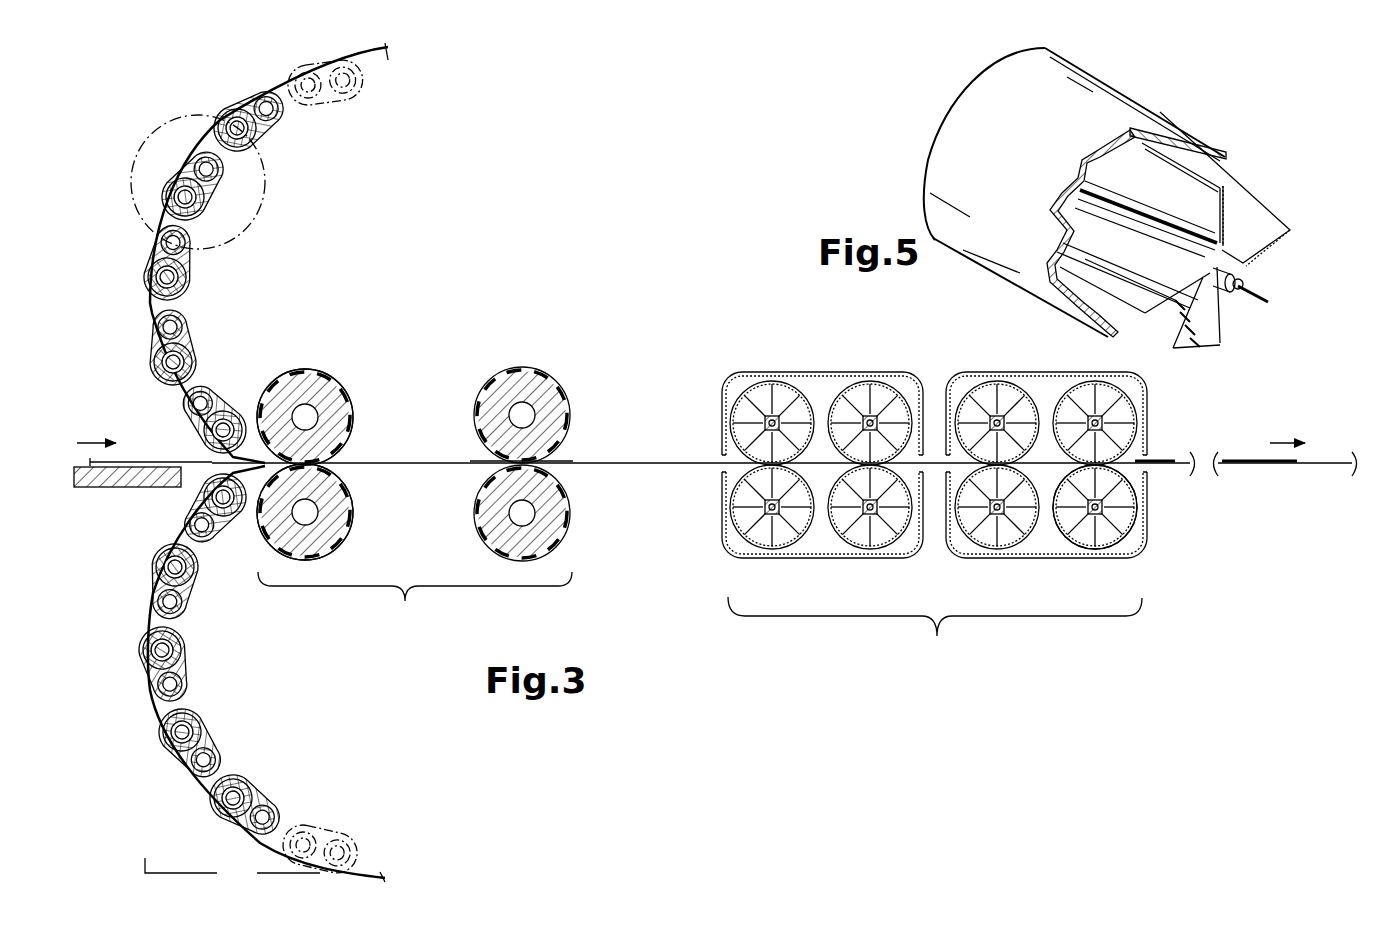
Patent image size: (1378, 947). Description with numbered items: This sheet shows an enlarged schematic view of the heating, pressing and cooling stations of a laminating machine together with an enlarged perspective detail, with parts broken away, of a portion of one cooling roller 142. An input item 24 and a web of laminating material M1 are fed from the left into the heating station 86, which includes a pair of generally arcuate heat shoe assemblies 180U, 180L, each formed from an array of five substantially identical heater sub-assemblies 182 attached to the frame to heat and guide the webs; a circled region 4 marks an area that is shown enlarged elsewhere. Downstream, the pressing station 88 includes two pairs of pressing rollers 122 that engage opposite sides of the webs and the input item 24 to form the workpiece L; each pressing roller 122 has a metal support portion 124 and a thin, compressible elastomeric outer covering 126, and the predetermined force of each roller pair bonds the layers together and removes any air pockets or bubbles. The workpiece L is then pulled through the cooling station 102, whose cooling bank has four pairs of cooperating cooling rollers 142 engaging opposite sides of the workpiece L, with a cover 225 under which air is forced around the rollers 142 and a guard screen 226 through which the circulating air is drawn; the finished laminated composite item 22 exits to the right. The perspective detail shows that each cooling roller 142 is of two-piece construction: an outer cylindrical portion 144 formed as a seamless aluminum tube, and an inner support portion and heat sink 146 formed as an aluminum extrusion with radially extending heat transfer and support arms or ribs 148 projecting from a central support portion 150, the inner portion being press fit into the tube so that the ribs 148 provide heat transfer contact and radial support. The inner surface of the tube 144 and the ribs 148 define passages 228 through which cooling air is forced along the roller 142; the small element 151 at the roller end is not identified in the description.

In FIG. 3, the web of laminating material M1 is at (382, 48).
In FIG. 3, the enlarged detail region 4 is at (263, 210).
In FIG. 3, the upper heat shoe assembly 180U is at (148, 305).
In FIG. 3, the lower heat shoe assembly 180L is at (151, 708).
In FIG. 3, the heater sub-assembly 182 is at (203, 355).
In FIG. 3, the input item 24 is at (195, 462).
In FIG. 3, the support portion 124 is at (283, 395).
In FIG. 3, the outer covering 126 is at (338, 378).
In FIG. 3, the pressing roller 122 is at (476, 375).
In FIG. 3, the pressing station 88 is at (415, 602).
In FIG. 3, the workpiece L is at (620, 465).
In FIG. 3, the cover 225 is at (965, 443).
In FIG. 3, the guard screen 226 is at (992, 398).
In FIG. 3, the cooling roller 142 is at (855, 383).
In FIG. 5, the cooling roller 142 is at (1212, 216).
In FIG. 3, the passage 228 is at (1110, 530).
In FIG. 5, the passage 228 is at (1187, 150).
In FIG. 3, the cooling station 102 is at (935, 632).
In FIG. 3, the finished laminated composite item 22 is at (1240, 461).
In FIG. 3, the heating station 86 is at (265, 871).
In FIG. 5, the outer cylindrical portion 144 is at (1107, 108).
In FIG. 5, the rib 148 is at (1240, 187).
In FIG. 5, the inner support portion and heat sink 146 is at (1287, 243).
In FIG. 5, the central support portion 150 is at (1237, 265).
In FIG. 5, the pin 151 is at (1237, 290).